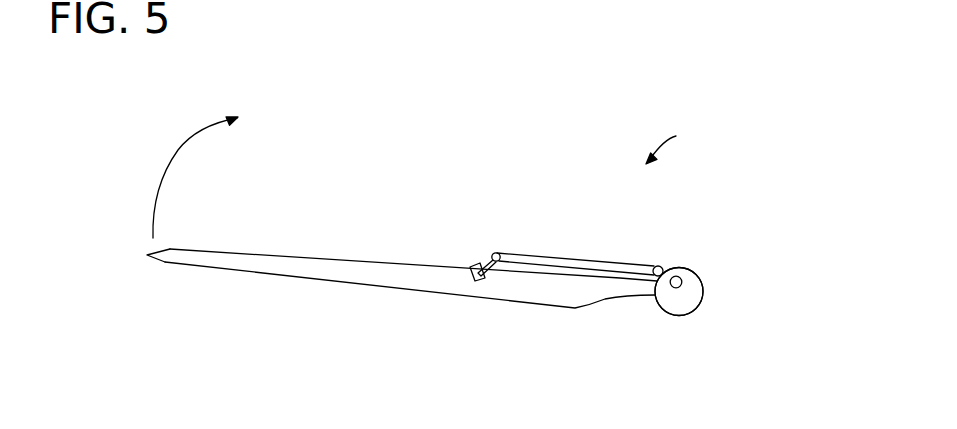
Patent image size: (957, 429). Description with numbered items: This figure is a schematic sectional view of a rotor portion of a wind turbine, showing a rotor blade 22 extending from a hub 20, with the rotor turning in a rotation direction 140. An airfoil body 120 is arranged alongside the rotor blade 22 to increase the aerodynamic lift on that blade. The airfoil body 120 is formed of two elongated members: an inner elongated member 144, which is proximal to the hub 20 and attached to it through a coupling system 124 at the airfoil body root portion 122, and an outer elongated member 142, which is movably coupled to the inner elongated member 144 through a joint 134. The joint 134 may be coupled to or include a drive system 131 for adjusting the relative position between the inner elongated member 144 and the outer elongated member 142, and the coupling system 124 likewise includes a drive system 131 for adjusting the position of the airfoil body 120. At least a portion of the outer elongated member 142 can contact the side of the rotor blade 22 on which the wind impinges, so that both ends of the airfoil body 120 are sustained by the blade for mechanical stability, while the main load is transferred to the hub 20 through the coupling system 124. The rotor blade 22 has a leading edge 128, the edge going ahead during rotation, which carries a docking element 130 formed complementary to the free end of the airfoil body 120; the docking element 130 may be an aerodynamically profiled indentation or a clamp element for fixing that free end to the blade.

The hub 20 is at (667, 313).
The rotor blade 22 is at (402, 270).
The airfoil body 120 is at (681, 142).
The airfoil body root portion 122 is at (655, 265).
The coupling system 124 is at (664, 262).
The leading edge 128 is at (303, 256).
The docking element 130 is at (477, 286).
The drive system 131 is at (682, 281).
The joint 134 is at (496, 252).
The rotation direction 140 is at (167, 160).
The outer elongated member 142 is at (489, 263).
The inner elongated member 144 is at (568, 257).